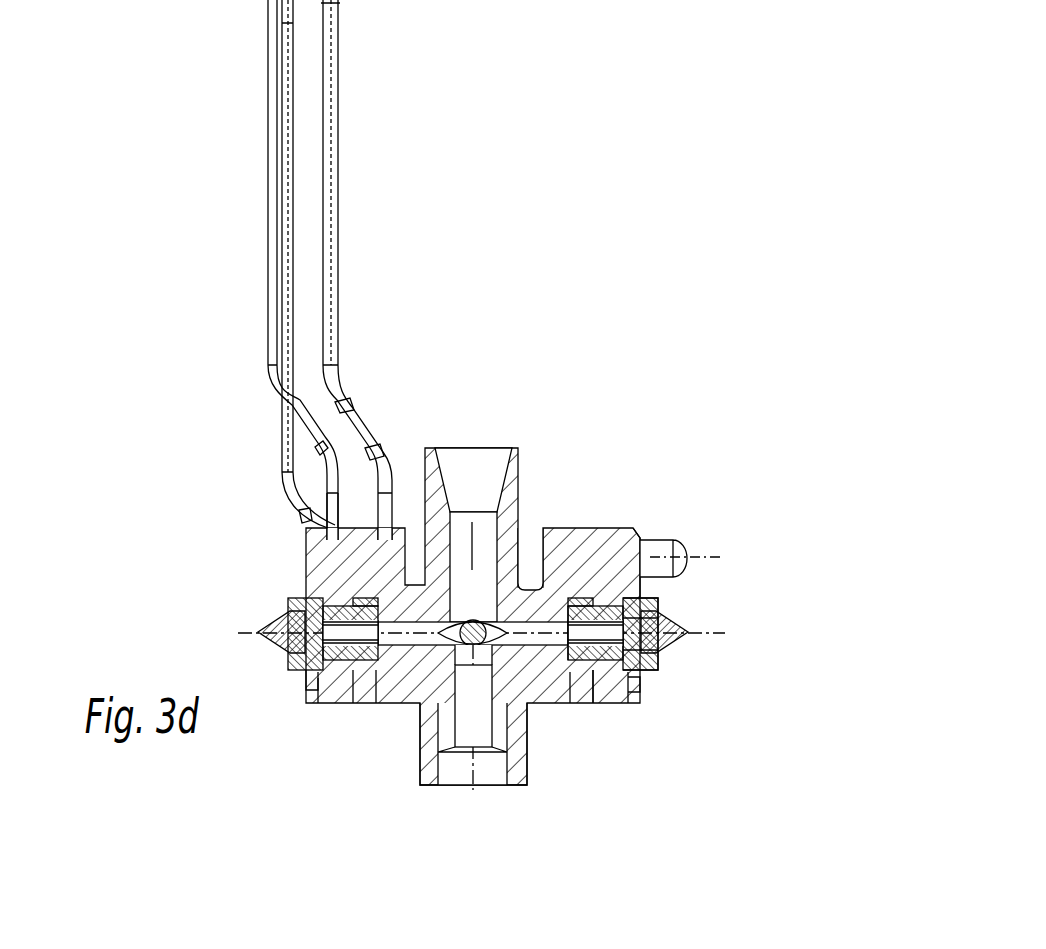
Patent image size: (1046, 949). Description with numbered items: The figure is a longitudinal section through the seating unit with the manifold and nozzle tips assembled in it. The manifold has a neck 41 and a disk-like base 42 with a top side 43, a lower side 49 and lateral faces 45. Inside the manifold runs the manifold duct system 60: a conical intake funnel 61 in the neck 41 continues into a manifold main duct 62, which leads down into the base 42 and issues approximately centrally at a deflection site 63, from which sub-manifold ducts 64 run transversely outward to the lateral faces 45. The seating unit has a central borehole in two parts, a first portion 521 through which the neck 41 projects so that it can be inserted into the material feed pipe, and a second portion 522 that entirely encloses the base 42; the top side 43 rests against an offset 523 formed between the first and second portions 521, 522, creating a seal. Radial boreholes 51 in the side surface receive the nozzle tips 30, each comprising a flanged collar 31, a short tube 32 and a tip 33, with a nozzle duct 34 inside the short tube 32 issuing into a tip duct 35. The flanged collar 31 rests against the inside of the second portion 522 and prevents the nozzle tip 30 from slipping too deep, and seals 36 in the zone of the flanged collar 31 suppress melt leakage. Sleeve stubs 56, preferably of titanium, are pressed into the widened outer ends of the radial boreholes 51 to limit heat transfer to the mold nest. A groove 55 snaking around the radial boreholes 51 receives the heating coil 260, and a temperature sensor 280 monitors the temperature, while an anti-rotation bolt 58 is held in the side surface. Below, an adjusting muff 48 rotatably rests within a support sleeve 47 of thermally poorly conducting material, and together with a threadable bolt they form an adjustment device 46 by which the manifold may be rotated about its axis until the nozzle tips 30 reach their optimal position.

The nozzle tip 30 is at (684, 620).
The flanged collar 31 is at (597, 662).
The short tube 32 is at (630, 665).
The tip 33 is at (690, 633).
The nozzle duct 34 is at (615, 668).
The tip duct 35 is at (660, 650).
The seal 36 is at (573, 700).
The neck 41 is at (533, 588).
The base 42 is at (556, 603).
The top side 43 is at (550, 607).
The lateral face 45 is at (641, 588).
The adjustment device 46 is at (542, 747).
The support sleeve 47 is at (428, 765).
The adjusting muff 48 is at (517, 773).
The lower side 49 is at (570, 662).
The radial borehole 51 is at (332, 604).
The groove 55 is at (308, 678).
The sleeve stub 56 is at (291, 668).
The anti-rotation bolt 58 is at (665, 543).
The manifold duct system 60 is at (496, 468).
The conical intake funnel 61 is at (441, 477).
The manifold main duct 62 is at (462, 567).
The deflection site 63 is at (475, 647).
The sub-manifold duct 64 is at (418, 645).
The heating coil 260 is at (261, 270).
The temperature sensor 280 is at (259, 264).
The first portion 521 is at (406, 577).
The second portion 522 is at (352, 688).
The offset 523 is at (332, 603).